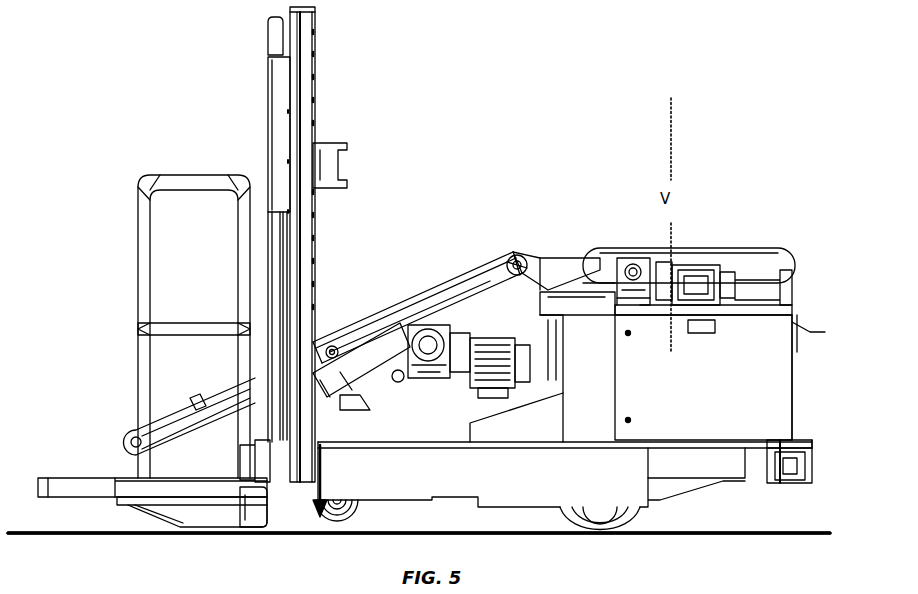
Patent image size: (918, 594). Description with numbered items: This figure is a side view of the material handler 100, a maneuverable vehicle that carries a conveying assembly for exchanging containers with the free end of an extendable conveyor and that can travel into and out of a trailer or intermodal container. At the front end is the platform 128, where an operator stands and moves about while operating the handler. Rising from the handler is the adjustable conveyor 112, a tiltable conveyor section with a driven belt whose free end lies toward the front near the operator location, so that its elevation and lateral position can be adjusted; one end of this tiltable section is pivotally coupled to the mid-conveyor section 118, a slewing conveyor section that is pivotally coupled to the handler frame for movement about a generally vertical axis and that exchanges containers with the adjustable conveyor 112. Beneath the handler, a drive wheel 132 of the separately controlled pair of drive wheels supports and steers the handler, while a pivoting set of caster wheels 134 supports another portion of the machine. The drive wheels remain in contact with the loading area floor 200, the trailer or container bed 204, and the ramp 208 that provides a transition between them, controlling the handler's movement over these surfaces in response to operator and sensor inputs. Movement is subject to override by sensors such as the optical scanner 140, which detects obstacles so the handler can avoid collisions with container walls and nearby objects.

The material handler 100 is at (192, 128).
The adjustable conveyor 112 is at (405, 282).
The mid-conveyor section 118 is at (641, 239).
The platform 128 is at (97, 478).
The drive wheel 132 is at (637, 536).
The caster wheels 134 is at (362, 537).
The optical scanner 140 is at (805, 462).
The loading area floor 200 is at (811, 531).
The trailer or container bed 204 is at (435, 517).
The ramp 208 is at (435, 517).